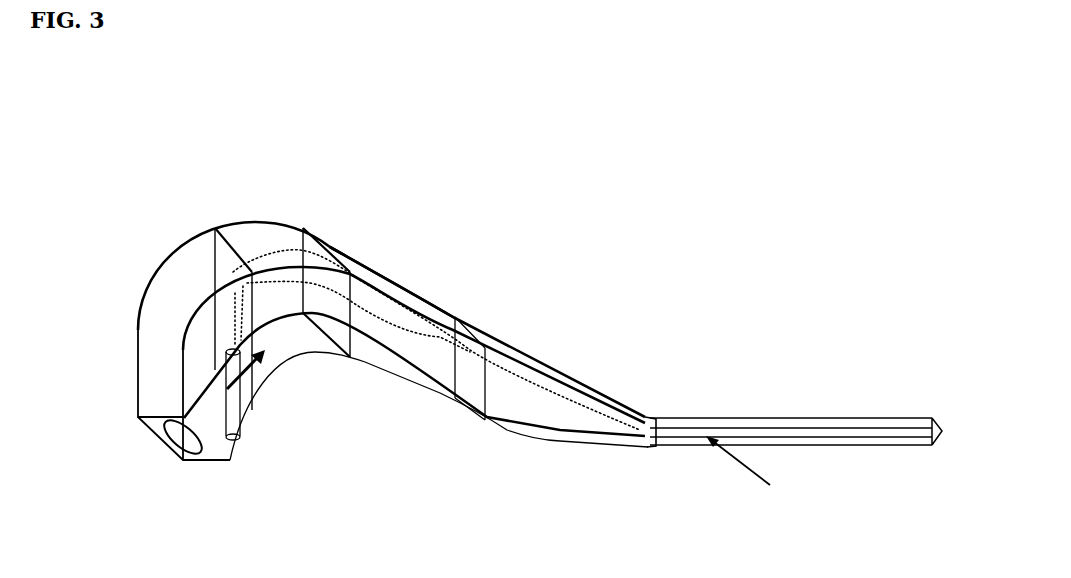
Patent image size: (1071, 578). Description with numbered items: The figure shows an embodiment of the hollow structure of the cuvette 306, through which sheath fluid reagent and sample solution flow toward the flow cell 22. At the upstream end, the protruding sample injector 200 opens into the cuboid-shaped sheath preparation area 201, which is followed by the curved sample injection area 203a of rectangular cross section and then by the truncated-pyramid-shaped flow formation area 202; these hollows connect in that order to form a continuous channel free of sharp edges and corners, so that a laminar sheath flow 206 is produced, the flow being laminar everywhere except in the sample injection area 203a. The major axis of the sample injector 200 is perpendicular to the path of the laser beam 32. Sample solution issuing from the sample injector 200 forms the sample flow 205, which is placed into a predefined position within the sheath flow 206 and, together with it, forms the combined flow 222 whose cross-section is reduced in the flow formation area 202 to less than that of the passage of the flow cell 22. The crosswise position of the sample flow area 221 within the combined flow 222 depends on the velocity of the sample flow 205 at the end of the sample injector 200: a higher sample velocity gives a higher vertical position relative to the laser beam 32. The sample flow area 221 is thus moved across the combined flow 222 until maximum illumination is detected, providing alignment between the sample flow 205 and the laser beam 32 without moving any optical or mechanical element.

The sheath preparation area 201 is at (160, 337).
The sample flow 205 is at (235, 277).
The sheath flow 206 is at (157, 398).
The sample injector 200 is at (230, 428).
The sample injection area 203a is at (307, 232).
The sample flow area 221 is at (453, 316).
The flow formation area 202 is at (527, 363).
The combined flow 222 is at (437, 360).
The cuvette 306 is at (680, 313).
The flow cell 22 is at (777, 422).
The laser beam 32 is at (718, 460).